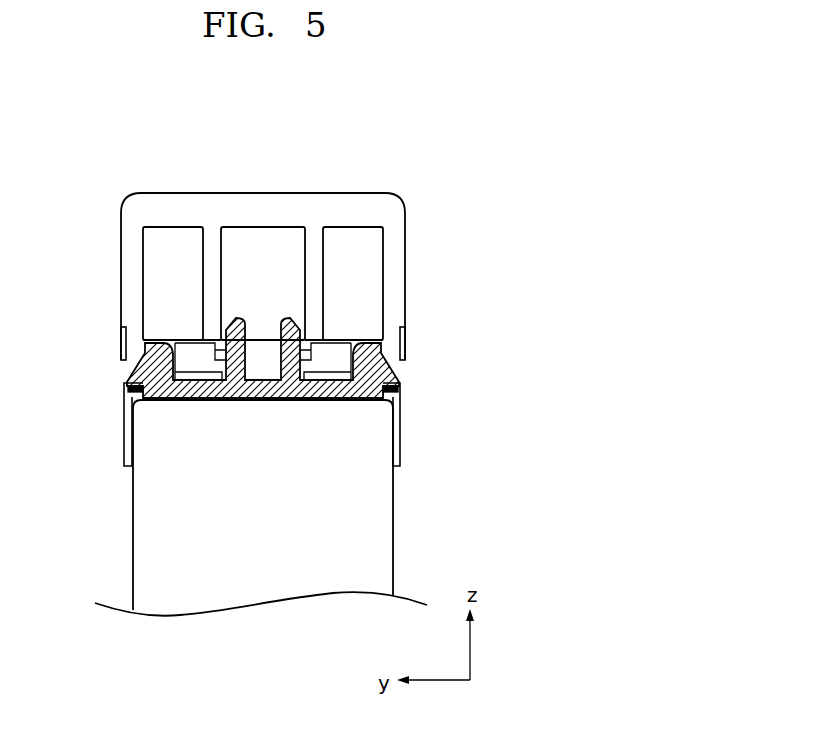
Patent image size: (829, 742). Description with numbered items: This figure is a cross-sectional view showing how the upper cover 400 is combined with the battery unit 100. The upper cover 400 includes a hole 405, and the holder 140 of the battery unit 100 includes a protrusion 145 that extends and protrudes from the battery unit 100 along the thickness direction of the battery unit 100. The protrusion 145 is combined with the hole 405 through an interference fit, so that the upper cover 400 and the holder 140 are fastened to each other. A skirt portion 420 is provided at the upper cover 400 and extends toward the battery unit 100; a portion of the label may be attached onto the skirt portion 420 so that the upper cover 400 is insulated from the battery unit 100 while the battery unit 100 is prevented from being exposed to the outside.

The upper cover 400 is at (413, 186).
The hole 405 is at (127, 373).
The holder 140 is at (378, 344).
The protrusion 145 is at (130, 385).
The skirt portion 420 is at (401, 445).
The battery unit 100 is at (368, 533).